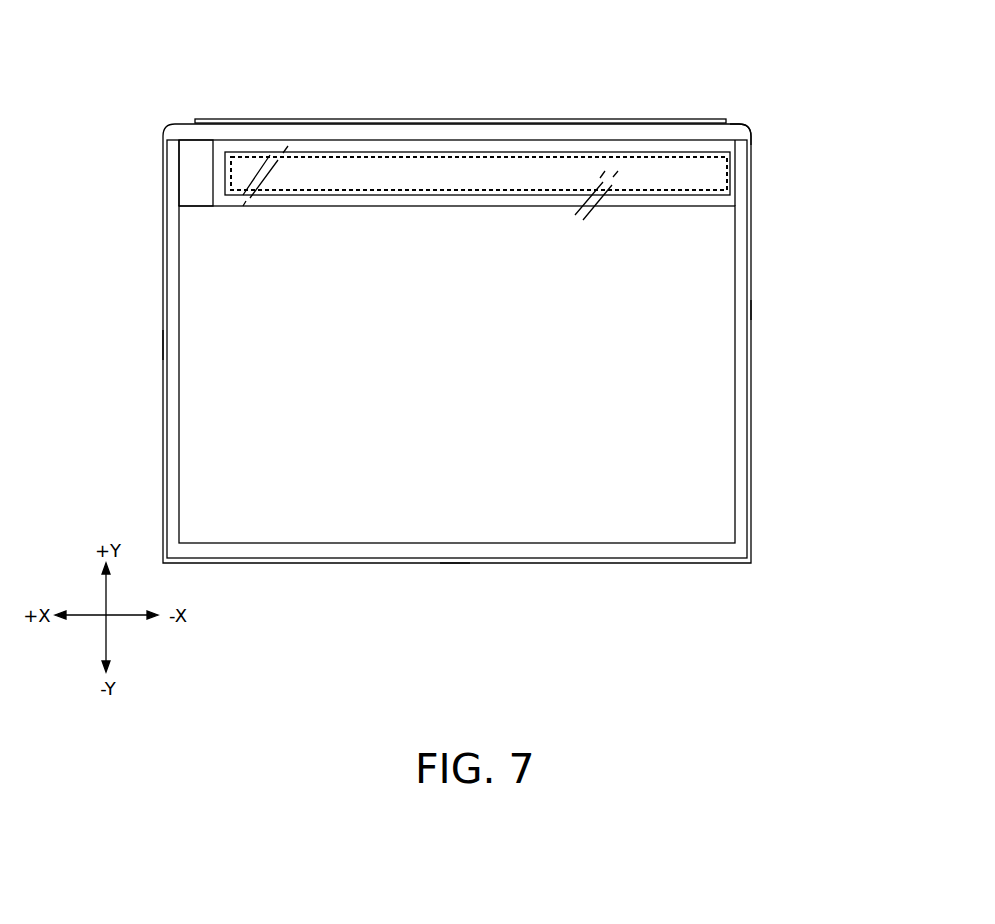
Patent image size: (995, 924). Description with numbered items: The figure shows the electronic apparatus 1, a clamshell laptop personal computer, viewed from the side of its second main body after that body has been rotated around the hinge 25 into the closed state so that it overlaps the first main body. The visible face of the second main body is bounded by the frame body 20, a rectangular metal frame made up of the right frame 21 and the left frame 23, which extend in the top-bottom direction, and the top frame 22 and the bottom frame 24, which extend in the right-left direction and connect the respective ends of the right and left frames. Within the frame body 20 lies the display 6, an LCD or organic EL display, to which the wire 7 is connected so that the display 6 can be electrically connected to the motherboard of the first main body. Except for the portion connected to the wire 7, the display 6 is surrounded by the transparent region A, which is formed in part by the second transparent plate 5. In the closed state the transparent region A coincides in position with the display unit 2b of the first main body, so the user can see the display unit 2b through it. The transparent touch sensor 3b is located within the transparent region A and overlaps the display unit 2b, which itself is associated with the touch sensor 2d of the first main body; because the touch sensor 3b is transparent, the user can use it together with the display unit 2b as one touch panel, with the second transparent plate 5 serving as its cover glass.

The electronic apparatus 1 is at (150, 100).
The display unit 2b is at (718, 175).
The touch sensor 2d is at (553, 153).
The touch sensor 3b is at (728, 162).
The second transparent plate 5 is at (740, 438).
The display 6 is at (700, 368).
The wire 7 is at (193, 187).
The frame body 20 is at (766, 510).
The right frame 21 is at (752, 307).
The top frame 22 is at (455, 565).
The left frame 23 is at (163, 345).
The bottom frame 24 is at (730, 124).
The hinge 25 is at (498, 119).
The transparent region A is at (664, 140).